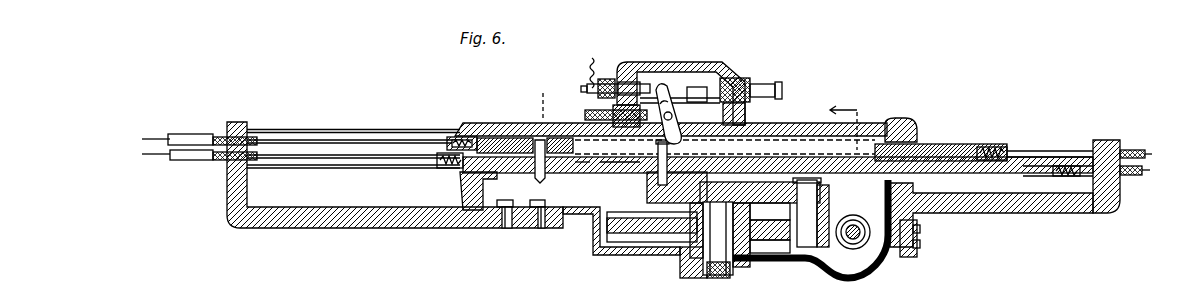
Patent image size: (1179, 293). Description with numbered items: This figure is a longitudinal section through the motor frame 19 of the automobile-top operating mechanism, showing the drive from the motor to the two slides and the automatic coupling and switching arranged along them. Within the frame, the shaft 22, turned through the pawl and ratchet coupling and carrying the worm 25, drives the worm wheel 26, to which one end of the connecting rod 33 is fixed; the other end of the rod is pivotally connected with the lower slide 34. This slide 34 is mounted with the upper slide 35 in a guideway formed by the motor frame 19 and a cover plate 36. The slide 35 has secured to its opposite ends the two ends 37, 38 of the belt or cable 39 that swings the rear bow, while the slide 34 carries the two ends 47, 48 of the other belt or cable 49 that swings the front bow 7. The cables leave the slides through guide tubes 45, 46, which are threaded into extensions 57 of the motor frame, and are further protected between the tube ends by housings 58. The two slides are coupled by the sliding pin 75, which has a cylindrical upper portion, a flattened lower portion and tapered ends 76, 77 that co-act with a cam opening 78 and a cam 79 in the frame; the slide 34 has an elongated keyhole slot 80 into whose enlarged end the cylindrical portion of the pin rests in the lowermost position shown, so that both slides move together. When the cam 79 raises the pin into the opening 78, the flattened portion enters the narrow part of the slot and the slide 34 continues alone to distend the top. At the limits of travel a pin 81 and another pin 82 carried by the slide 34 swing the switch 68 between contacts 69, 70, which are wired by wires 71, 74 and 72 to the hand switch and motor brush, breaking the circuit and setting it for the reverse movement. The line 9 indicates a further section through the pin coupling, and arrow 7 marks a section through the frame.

The front bow 7 is at (850, 121).
The section line 9 is at (541, 97).
The motor frame 19 is at (788, 258).
The shaft 22 is at (853, 233).
The worm 25 is at (880, 252).
The worm wheel 26 is at (665, 232).
The connecting rod 33 is at (655, 180).
The slide 34 is at (783, 170).
The slide 35 is at (497, 142).
The cover plate 36 is at (522, 125).
The end of cable 39 37 is at (1040, 152).
The end of cable 39 38 is at (330, 125).
The belt or cable 39 is at (172, 138).
The tube 45 is at (212, 140).
The tube 46 is at (1122, 152).
The end of cable 49 47 is at (1100, 214).
The end of cable 49 48 is at (392, 160).
The belt or cable 49 is at (172, 157).
The extension of the motor frame 57 is at (340, 229).
The housing 58 is at (400, 130).
The switch 68 is at (698, 87).
The contact 69 is at (658, 85).
The contact 70 is at (705, 88).
The wire 71 is at (776, 96).
The wire 72 is at (600, 110).
The wire 74 is at (598, 60).
The sliding pin 75 is at (578, 174).
The tapered upper end of pin 75 76 is at (557, 126).
The tapered lower end of pin 75 77 is at (535, 178).
The cam opening 78 is at (463, 137).
The cam 79 is at (465, 185).
The keyhole slot 80 is at (622, 172).
The pin 81 is at (843, 175).
The pin 82 is at (660, 148).